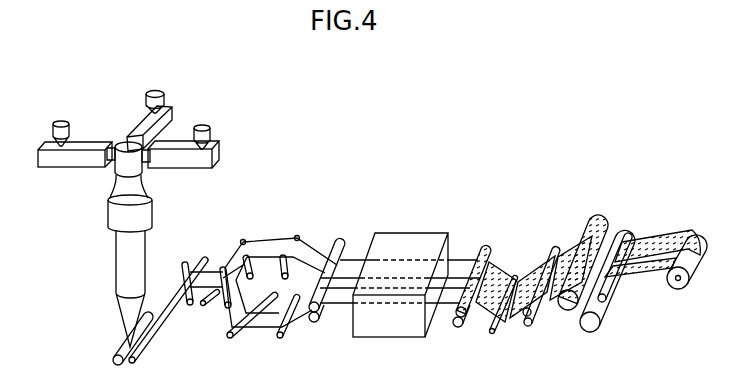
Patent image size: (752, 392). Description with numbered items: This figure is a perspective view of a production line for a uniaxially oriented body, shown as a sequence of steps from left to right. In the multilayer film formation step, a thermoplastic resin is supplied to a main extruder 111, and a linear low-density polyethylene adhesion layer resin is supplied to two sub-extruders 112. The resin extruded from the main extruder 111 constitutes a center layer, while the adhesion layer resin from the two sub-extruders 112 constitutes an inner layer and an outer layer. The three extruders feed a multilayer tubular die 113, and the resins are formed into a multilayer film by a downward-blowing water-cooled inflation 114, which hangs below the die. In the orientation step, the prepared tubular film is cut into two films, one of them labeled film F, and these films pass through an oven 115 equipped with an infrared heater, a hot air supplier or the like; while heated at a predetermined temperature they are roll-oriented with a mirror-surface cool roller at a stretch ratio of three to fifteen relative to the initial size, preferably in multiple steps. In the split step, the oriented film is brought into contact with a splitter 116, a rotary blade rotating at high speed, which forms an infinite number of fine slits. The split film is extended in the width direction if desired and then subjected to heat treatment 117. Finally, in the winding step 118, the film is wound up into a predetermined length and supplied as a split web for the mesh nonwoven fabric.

The main extruder 111 is at (58, 165).
The sub-extruders 112 is at (173, 115).
The multilayer tubular die 113 is at (127, 143).
The downward-blowing water-cooled inflation 114 is at (123, 260).
The oven 115 is at (408, 242).
The splitter (rotary blade) 116 is at (487, 248).
The heat treatment 117 is at (612, 230).
The winding step 118 is at (675, 289).
The film F is at (268, 247).